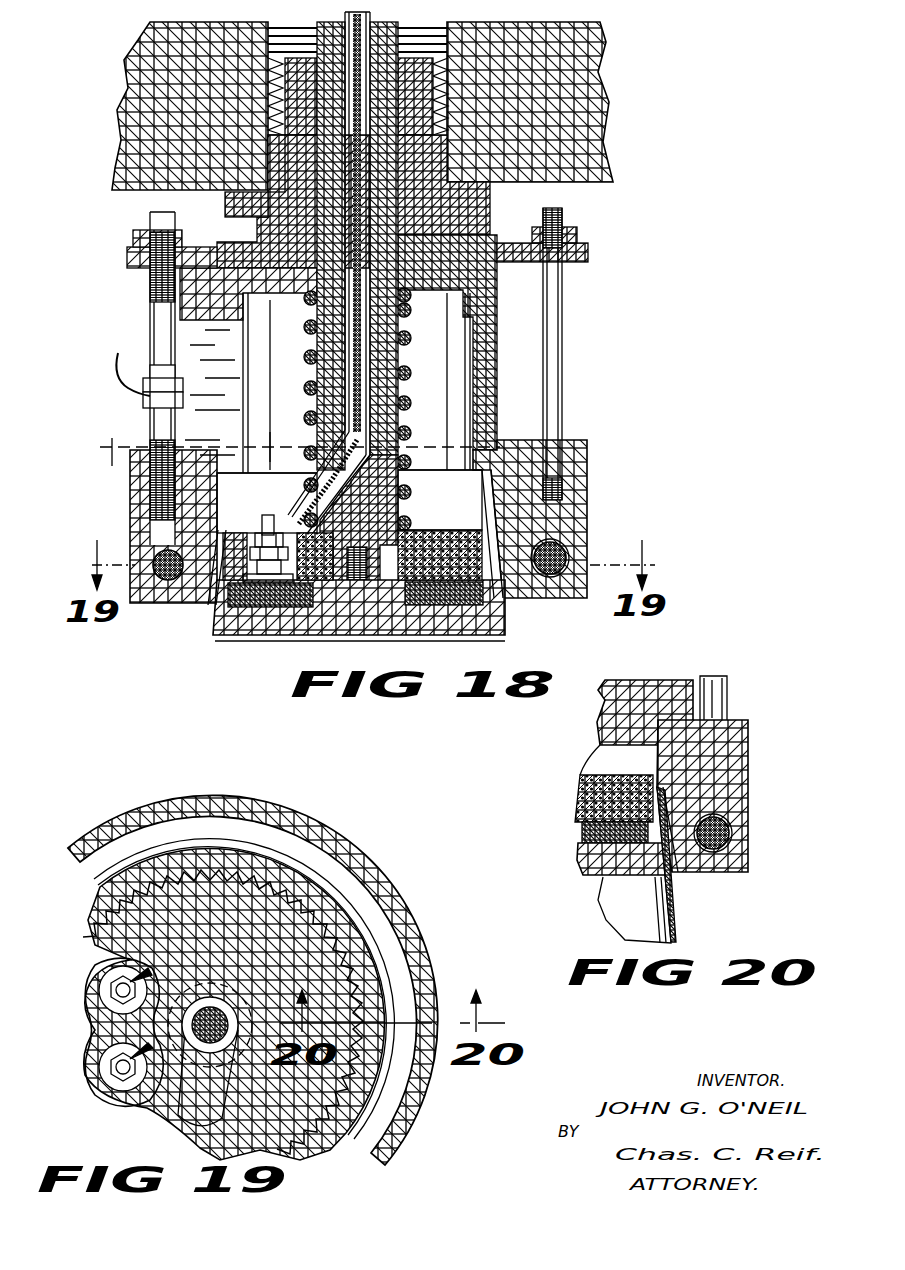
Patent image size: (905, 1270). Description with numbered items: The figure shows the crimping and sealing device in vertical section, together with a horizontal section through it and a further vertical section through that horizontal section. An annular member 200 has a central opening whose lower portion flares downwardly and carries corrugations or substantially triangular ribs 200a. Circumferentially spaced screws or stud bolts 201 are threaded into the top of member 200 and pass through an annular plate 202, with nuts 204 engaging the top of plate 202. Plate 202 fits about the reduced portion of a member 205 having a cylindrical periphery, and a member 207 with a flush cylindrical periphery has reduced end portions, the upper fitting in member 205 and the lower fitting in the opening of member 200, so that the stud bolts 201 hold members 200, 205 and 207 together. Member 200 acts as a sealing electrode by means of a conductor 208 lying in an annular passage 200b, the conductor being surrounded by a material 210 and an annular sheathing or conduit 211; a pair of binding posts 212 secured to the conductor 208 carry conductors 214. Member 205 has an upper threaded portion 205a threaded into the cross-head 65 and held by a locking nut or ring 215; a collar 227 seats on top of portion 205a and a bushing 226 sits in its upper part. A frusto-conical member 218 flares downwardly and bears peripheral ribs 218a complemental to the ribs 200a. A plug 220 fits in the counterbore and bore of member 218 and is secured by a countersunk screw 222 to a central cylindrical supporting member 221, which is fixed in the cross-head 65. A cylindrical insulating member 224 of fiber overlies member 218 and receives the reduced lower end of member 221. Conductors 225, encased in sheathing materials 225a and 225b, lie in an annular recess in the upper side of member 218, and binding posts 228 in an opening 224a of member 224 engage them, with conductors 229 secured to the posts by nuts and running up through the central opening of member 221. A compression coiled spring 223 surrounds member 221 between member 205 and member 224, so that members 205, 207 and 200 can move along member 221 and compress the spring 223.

In FIG. 18, the cross-head 65 is at (598, 117).
In FIG. 18, the annular member 200 is at (573, 497).
In FIG. 20, the annular member 200 is at (733, 760).
In FIG. 19, the annular member 200 is at (155, 805).
In FIG. 18, the corrugations or triangular ribs 200a is at (208, 625).
In FIG. 20, the corrugations or triangular ribs 200a is at (687, 868).
In FIG. 19, the corrugations or triangular ribs 200a is at (242, 878).
In FIG. 19, the annular passage 200b is at (350, 883).
In FIG. 18, the screws or stud bolts 201 is at (557, 337).
In FIG. 20, the screws or stud bolts 201 is at (723, 702).
In FIG. 18, the annular plate 202 is at (590, 250).
In FIG. 18, the nuts 204 is at (536, 232).
In FIG. 18, the member with cylindrical periphery 205 is at (472, 237).
In FIG. 18, the upper threaded portion 205a is at (268, 180).
In FIG. 18, the member with cylindrical periphery 207 is at (527, 377).
In FIG. 20, the member with cylindrical periphery 207 is at (652, 688).
In FIG. 18, the conductor 208 is at (567, 558).
In FIG. 20, the conductor 208 is at (717, 830).
In FIG. 18, the surrounding member or material 210 is at (580, 563).
In FIG. 20, the surrounding member or material 210 is at (733, 840).
In FIG. 18, the annular sheathing or conduit 211 is at (568, 558).
In FIG. 20, the annular sheathing or conduit 211 is at (730, 822).
In FIG. 18, the binding posts 212 is at (153, 440).
In FIG. 18, the conductors 214 is at (118, 353).
In FIG. 18, the locking nut or ring 215 is at (225, 203).
In FIG. 18, the frusto-conical member 218 is at (231, 636).
In FIG. 20, the frusto-conical member 218 is at (593, 867).
In FIG. 19, the frusto-conical member 218 is at (303, 967).
In FIG. 18, the corrugations or triangular ribs 218a is at (214, 634).
In FIG. 20, the corrugations or triangular ribs 218a is at (642, 876).
In FIG. 19, the corrugations or triangular ribs 218a is at (270, 890).
In FIG. 18, the plug 220 is at (327, 625).
In FIG. 19, the plug 220 is at (217, 1055).
In FIG. 18, the central cylindrical supporting member 221 is at (272, 44).
In FIG. 18, the countersunk screw 222 is at (400, 507).
In FIG. 19, the countersunk screw 222 is at (203, 1040).
In FIG. 18, the compression coiled spring 223 is at (432, 342).
In FIG. 18, the cylindrical insulating member 224 is at (437, 540).
In FIG. 20, the cylindrical insulating member 224 is at (580, 799).
In FIG. 18, the opening 224a is at (287, 540).
In FIG. 18, the conductors 225 is at (478, 608).
In FIG. 20, the conductors 225 is at (582, 841).
In FIG. 18, the sheathing material 225a is at (503, 620).
In FIG. 18, the sheathing material 225b is at (510, 600).
In FIG. 18, the bushing 226 is at (402, 163).
In FIG. 18, the collar 227 is at (436, 88).
In FIG. 18, the binding posts 228 is at (291, 531).
In FIG. 19, the binding posts 228 is at (127, 992).
In FIG. 18, the conductors 229 is at (311, 448).